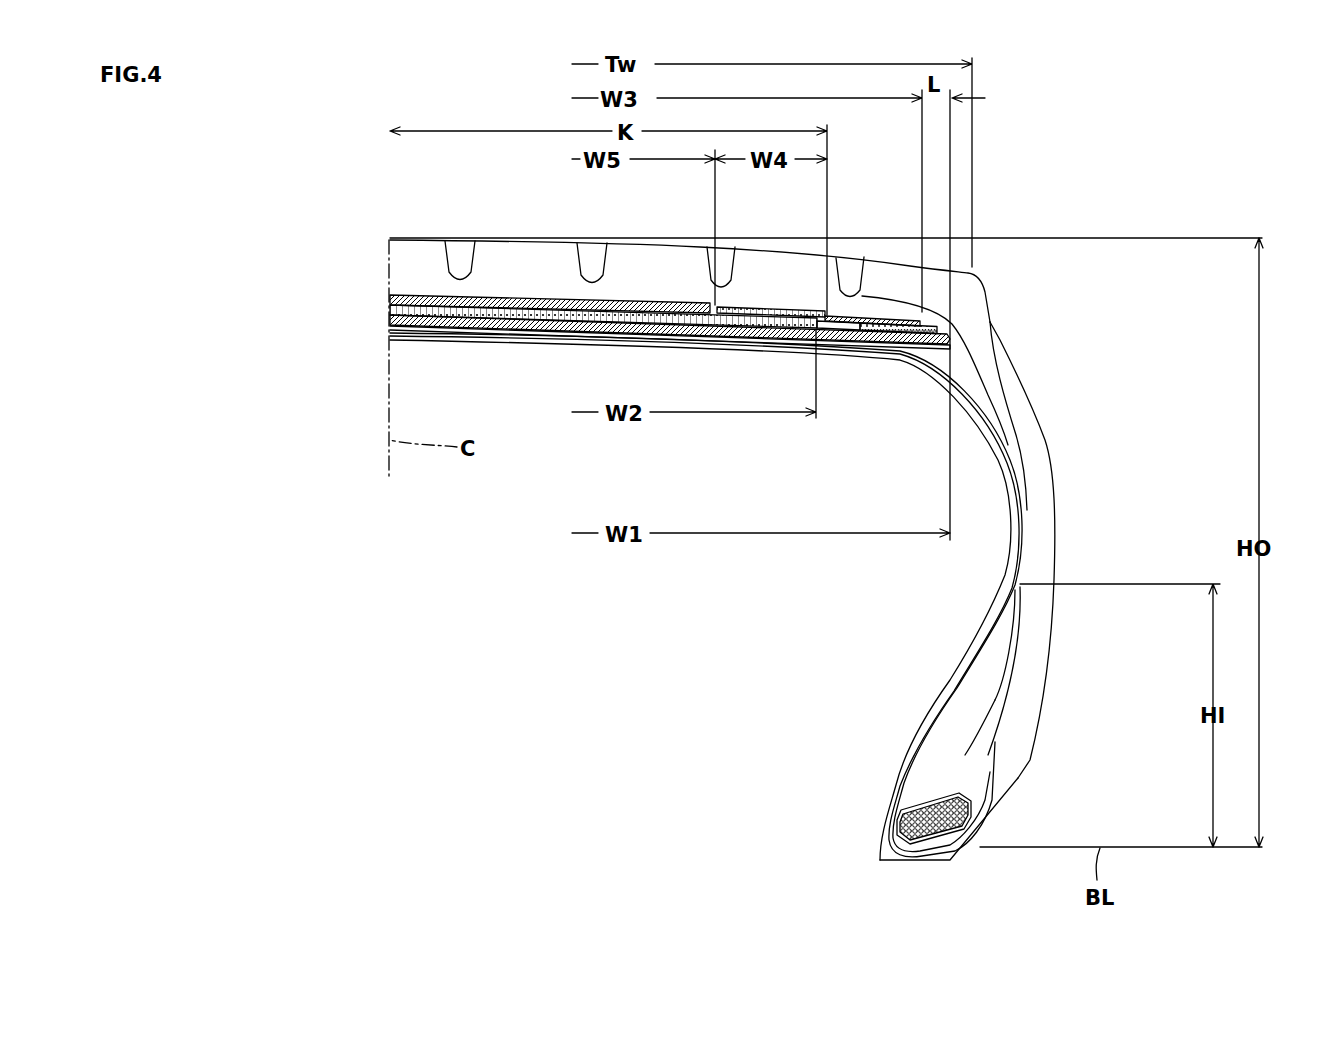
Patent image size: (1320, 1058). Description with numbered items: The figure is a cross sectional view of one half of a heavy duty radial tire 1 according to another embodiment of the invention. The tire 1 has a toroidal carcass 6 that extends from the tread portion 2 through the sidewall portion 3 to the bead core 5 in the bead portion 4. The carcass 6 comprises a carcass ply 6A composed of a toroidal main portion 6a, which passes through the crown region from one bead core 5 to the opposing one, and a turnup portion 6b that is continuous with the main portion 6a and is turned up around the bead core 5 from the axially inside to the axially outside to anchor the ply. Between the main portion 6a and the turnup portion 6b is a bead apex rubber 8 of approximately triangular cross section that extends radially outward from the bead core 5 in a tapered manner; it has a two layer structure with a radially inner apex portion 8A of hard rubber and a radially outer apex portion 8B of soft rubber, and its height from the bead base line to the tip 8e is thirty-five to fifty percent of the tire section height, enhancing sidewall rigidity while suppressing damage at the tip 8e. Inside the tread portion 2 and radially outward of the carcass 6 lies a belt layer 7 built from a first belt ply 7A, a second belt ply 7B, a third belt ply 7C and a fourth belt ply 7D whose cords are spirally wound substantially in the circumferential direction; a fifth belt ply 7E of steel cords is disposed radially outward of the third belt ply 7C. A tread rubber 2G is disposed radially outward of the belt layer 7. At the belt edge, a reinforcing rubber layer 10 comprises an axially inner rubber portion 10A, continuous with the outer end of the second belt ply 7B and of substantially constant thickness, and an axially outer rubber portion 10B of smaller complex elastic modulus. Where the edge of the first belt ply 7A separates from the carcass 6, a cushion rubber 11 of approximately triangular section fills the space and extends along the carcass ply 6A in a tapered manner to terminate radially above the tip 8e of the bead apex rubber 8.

The heavy duty radial tire 1 is at (1098, 197).
The tread portion 2 is at (479, 207).
The tread rubber 2G is at (522, 240).
The sidewall portion 3 is at (1087, 474).
The bead portion 4 is at (864, 813).
The bead core 5 is at (943, 833).
The carcass 6 is at (797, 655).
The carcass ply 6A is at (706, 595).
The main portion 6a is at (970, 672).
The turnup portion 6b is at (990, 773).
The belt layer 7 is at (398, 269).
The first belt ply 7A is at (390, 331).
The second belt ply 7B is at (390, 320).
The third belt ply 7C is at (388, 310).
The fourth belt ply 7D is at (758, 305).
The fifth belt ply 7E is at (390, 297).
The bead apex rubber 8 is at (1143, 628).
The inner apex portion 8A is at (943, 745).
The outer apex portion 8B is at (1007, 647).
The tip 8e is at (1020, 587).
The reinforcing rubber layer 10 is at (937, 466).
The axially inner rubber portion 10A is at (835, 333).
The axially outer rubber portion 10B is at (905, 345).
The cushion rubber 11 is at (972, 378).